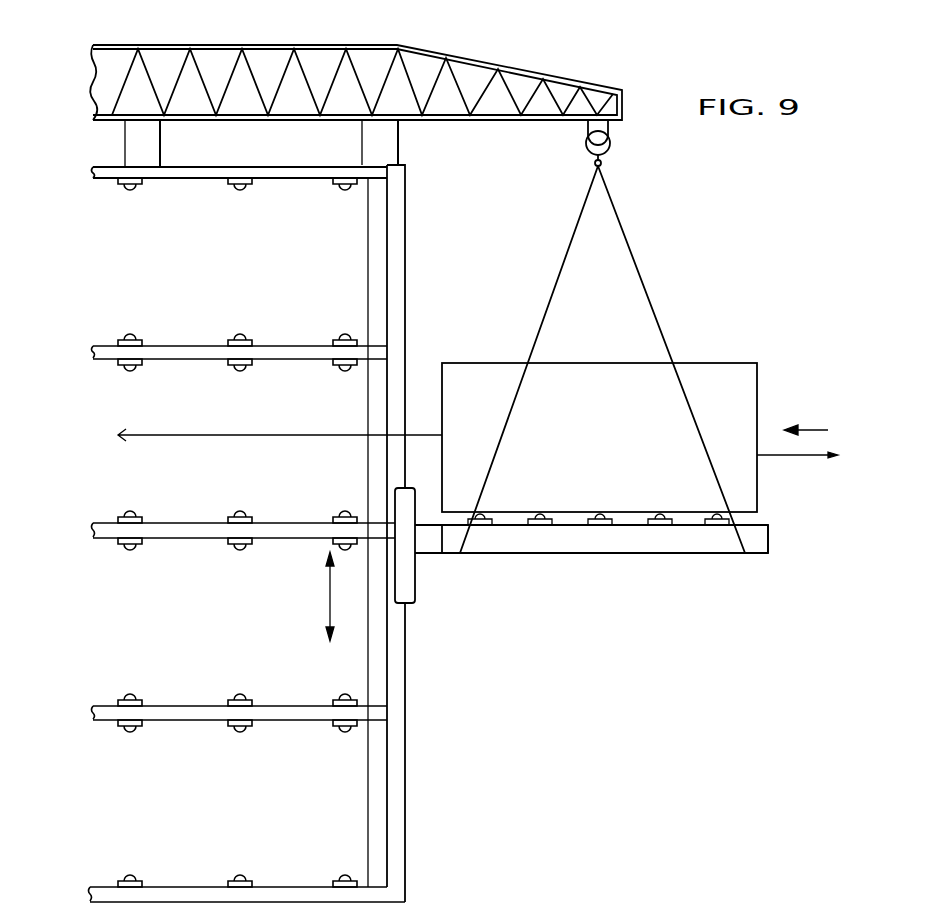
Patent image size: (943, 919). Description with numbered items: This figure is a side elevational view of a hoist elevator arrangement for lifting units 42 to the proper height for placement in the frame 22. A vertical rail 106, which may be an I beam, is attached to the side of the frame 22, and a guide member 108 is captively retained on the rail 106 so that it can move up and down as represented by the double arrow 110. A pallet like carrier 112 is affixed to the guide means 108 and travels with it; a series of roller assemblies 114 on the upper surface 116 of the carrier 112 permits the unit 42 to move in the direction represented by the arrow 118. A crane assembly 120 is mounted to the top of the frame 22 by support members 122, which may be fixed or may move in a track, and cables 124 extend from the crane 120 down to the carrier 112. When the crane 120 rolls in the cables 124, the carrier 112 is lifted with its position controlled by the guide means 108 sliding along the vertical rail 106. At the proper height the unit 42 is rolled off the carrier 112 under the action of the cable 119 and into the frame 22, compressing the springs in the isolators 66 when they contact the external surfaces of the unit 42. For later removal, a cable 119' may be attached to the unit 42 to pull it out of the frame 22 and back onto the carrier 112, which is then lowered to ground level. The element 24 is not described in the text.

The crane assembly 120 is at (590, 82).
The support members 122 is at (152, 141).
The frame 22 is at (258, 165).
The vertical column 24 is at (374, 280).
The vertical rail 106 is at (406, 730).
The isolators 66 is at (140, 366).
The cable 119 is at (280, 452).
The double arrow 110 is at (330, 593).
The guide member 108 is at (407, 583).
The unit 42 is at (732, 385).
The cables 124 is at (652, 300).
The pallet like carrier 112 is at (622, 549).
The upper surface 116 is at (765, 527).
The roller assemblies 114 is at (582, 531).
The arrow 118 is at (800, 430).
The cable 119' is at (799, 473).